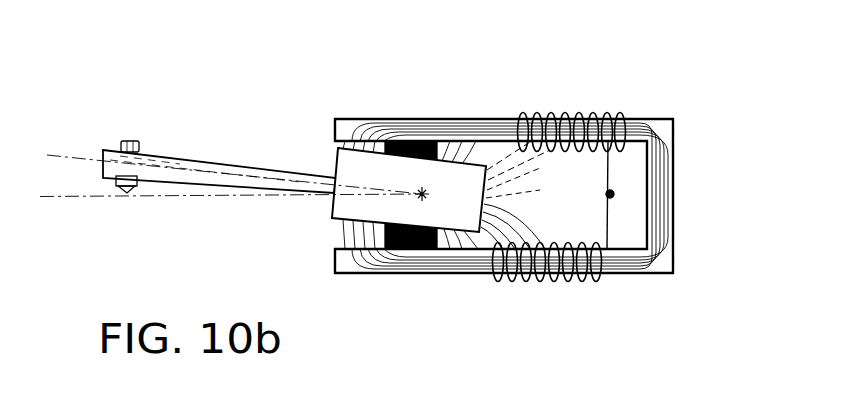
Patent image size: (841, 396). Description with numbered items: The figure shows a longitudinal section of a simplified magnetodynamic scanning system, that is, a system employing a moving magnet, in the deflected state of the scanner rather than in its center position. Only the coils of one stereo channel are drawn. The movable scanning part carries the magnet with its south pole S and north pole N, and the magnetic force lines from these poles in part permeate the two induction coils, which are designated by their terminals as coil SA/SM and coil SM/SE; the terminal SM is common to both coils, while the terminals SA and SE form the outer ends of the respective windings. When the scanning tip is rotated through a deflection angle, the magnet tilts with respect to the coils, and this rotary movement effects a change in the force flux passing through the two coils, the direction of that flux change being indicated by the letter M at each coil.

The south pole of moving magnet S is at (409, 190).
The north pole of moving magnet N is at (504, 195).
The coil terminal SA is at (512, 146).
The coil terminal SE is at (507, 278).
The common coil terminal SM is at (610, 194).
The direction of force flux change M is at (537, 97).